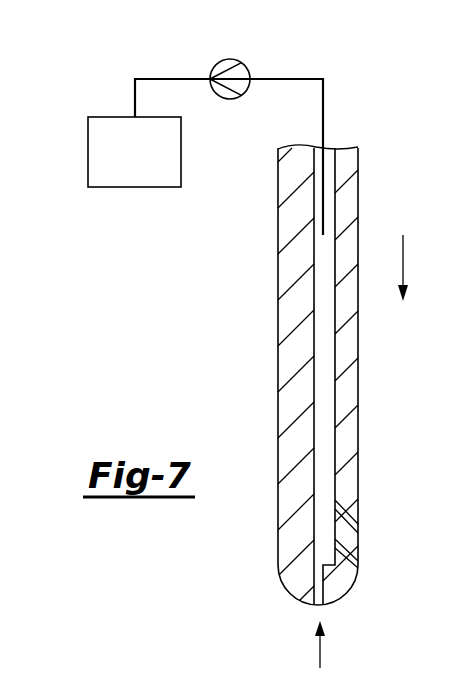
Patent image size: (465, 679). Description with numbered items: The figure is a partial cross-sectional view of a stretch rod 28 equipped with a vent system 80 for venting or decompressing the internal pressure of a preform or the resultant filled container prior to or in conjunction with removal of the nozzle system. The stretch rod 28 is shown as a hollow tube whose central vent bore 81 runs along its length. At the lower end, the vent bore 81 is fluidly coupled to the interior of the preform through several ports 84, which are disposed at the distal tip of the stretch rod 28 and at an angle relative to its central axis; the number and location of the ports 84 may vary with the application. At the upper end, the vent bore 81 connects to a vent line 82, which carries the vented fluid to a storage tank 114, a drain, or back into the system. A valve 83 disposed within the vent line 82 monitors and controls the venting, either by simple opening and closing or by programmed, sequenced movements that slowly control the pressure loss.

The storage tank 114 is at (88, 150).
The vent line 82 is at (178, 77).
The valve 83 is at (226, 60).
The stretch rod 28 is at (270, 251).
The vent bore 81 is at (292, 342).
The vent system 80 is at (394, 122).
The ports 84 is at (357, 529).